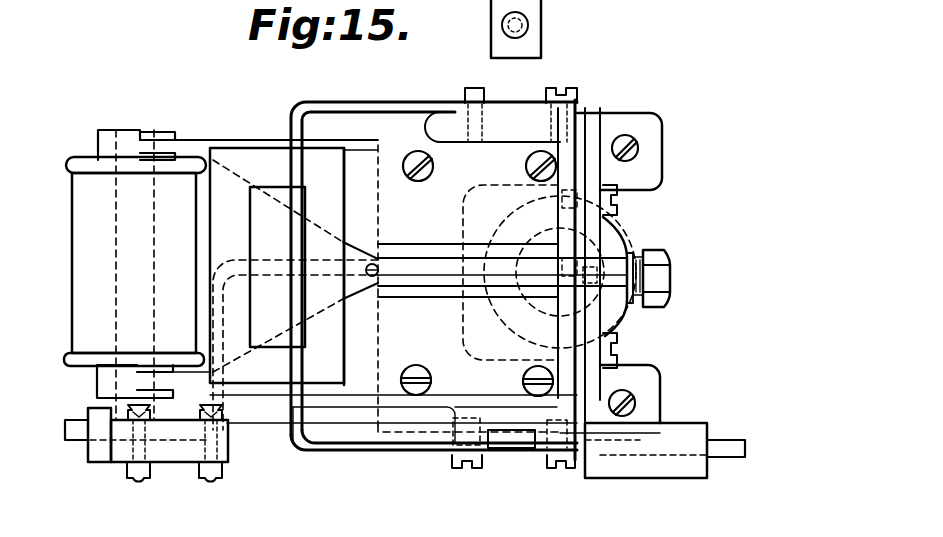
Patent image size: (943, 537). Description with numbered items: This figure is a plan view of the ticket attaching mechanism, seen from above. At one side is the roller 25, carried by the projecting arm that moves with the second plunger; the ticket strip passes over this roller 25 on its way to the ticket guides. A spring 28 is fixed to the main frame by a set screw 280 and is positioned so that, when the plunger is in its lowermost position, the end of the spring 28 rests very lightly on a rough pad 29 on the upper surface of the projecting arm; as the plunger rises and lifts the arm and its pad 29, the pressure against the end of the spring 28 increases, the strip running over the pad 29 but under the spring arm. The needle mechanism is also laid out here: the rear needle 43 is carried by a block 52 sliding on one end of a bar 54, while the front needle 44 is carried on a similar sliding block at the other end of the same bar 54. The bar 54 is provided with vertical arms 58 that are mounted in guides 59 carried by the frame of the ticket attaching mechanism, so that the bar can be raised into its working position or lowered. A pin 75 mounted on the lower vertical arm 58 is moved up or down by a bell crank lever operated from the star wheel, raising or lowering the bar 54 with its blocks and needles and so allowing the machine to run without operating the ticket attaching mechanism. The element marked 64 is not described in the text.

The roller 25 is at (137, 275).
The spring 28 is at (377, 107).
The set screw 280 is at (580, 98).
The rough pad 29 is at (297, 266).
The rear needle 43 is at (368, 287).
The front needle 44 is at (630, 257).
The block 52 is at (123, 460).
The bar 54 is at (65, 428).
The vertical arms 58 is at (490, 6).
The guides 59 is at (378, 455).
The block 64 is at (98, 457).
The pin 75 is at (528, 23).